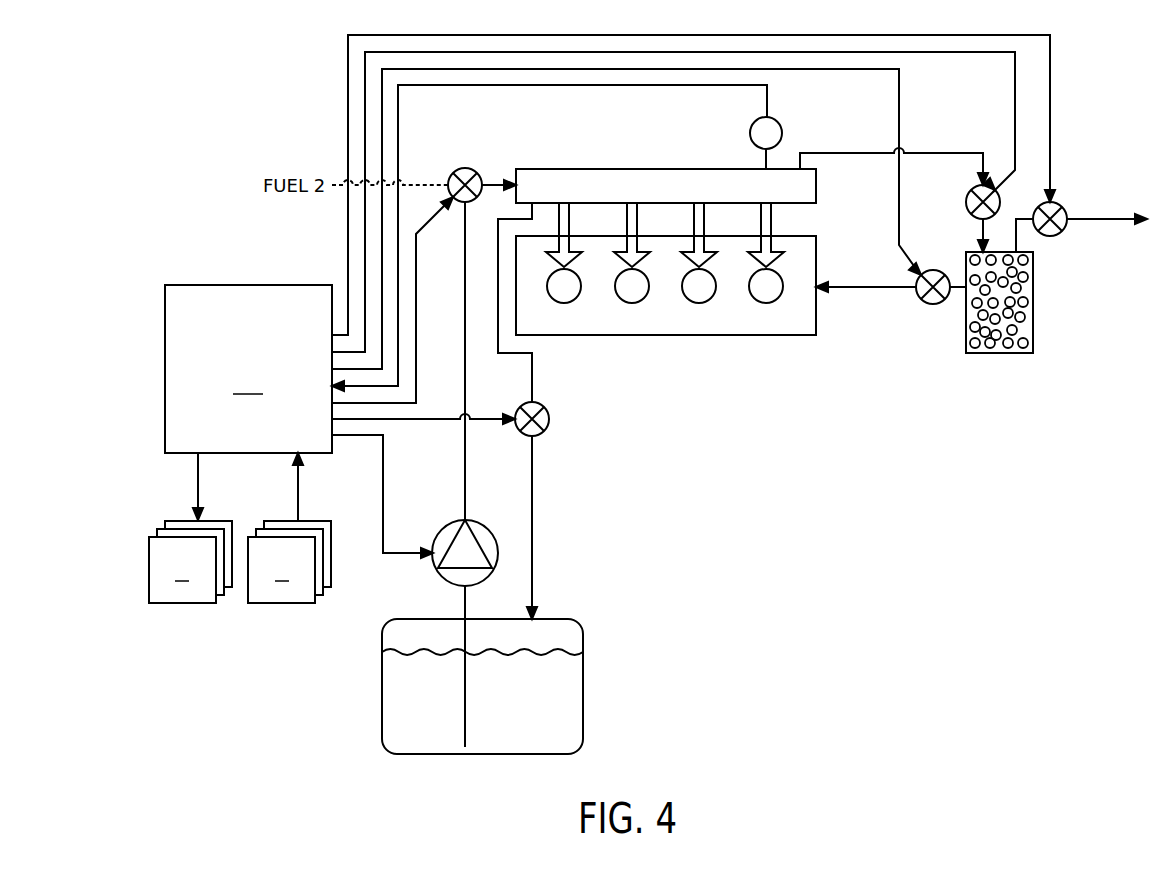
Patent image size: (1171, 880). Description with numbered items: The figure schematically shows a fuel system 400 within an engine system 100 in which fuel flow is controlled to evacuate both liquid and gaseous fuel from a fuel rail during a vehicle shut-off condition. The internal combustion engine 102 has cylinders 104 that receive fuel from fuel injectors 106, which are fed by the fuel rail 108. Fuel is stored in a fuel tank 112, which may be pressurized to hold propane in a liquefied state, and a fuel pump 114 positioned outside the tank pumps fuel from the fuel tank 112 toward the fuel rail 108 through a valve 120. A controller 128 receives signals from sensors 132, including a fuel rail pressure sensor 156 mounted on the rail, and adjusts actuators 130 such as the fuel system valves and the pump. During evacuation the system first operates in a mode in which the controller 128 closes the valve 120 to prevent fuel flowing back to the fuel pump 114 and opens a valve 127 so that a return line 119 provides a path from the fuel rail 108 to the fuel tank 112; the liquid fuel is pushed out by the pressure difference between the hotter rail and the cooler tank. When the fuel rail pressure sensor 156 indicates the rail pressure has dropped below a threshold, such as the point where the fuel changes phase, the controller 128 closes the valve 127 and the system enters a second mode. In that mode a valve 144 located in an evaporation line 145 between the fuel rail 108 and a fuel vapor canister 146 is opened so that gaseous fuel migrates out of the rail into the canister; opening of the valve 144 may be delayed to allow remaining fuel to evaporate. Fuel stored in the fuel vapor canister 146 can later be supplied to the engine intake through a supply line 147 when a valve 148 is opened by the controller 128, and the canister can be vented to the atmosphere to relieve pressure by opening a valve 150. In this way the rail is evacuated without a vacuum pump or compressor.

The engine system 100 is at (93, 83).
The internal combustion engine 102 is at (785, 335).
The cylinders 104 is at (770, 304).
The fuel injectors 106 is at (773, 225).
The fuel rail 108 is at (583, 169).
The fuel tank 112 is at (583, 642).
The fuel pump 114 is at (450, 521).
The return line 119 is at (534, 369).
The valve 120 is at (462, 168).
The valve 127 is at (550, 410).
The controller 128 is at (248, 369).
The actuators 130 is at (183, 605).
The sensors 132 is at (283, 605).
The valve 144 is at (968, 190).
The evaporation line 145 is at (917, 151).
The fuel vapor canister 146 is at (1000, 353).
The supply line 147 is at (843, 290).
The valve 148 is at (922, 303).
The valve 150 is at (1055, 237).
The fuel rail pressure sensor 156 is at (751, 126).
The fuel system 400 is at (639, 415).